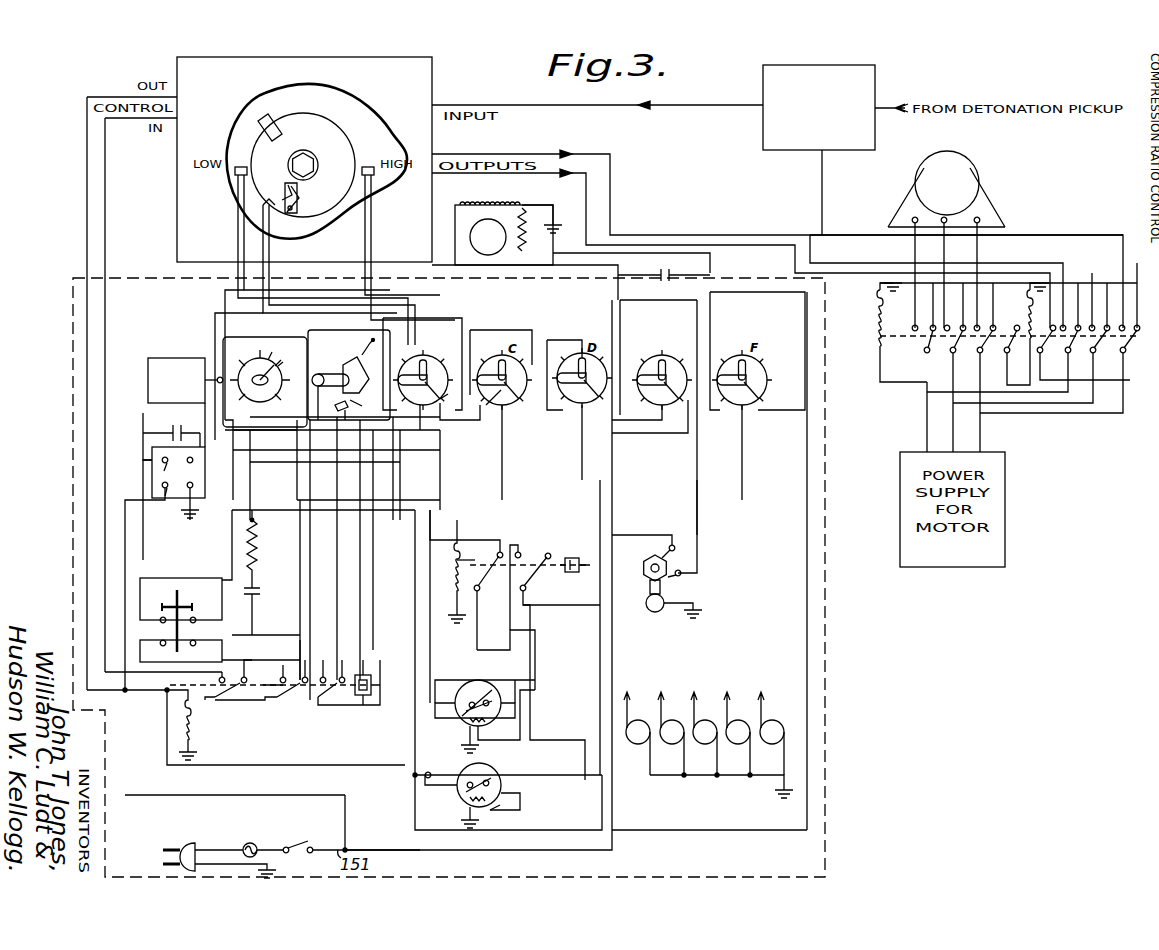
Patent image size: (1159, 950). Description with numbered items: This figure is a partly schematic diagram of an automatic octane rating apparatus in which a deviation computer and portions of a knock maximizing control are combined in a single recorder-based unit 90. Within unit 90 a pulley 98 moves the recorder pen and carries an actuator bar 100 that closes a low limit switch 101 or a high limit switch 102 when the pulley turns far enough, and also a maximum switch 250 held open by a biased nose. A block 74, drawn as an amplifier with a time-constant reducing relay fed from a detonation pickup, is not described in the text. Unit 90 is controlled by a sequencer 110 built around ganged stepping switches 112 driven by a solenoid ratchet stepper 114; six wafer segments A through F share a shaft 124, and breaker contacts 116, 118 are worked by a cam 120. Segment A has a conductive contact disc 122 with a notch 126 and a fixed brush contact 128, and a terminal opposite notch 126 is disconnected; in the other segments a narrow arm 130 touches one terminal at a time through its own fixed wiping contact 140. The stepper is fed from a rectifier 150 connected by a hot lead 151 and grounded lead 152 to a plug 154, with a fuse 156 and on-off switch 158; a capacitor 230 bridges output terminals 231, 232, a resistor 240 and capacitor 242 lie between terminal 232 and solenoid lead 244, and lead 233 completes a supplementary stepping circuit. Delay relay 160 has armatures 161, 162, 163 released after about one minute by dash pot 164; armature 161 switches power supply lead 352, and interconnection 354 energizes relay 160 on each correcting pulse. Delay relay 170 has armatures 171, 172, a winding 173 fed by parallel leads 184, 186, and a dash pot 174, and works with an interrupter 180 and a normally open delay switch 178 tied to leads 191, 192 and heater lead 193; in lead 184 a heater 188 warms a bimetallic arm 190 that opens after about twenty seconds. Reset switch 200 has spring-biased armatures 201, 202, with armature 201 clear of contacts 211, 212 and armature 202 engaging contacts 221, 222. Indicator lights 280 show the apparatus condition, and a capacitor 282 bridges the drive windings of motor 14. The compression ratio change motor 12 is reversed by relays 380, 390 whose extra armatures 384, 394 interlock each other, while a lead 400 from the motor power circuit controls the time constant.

The compression ratio change motor 12 is at (978, 178).
The motor 14 is at (490, 252).
The amplifier with time constant reducing relay 74 is at (876, 82).
The unit 90 is at (432, 80).
The pulley 98 is at (298, 118).
The actuator bar 100 is at (258, 124).
The low limit switch 101 is at (234, 198).
The high limit switch 102 is at (374, 190).
The sequencer 110 is at (73, 340).
The stepping switches 112 is at (227, 373).
The solenoid ratchet stepper 114 is at (148, 380).
The breaker contact 116 is at (329, 410).
The breaker contact 118 is at (367, 400).
The cam 120 is at (349, 375).
The contact disc 122 is at (272, 352).
The shaft 124 is at (320, 373).
The notch 126 is at (248, 360).
The wiper contact 128 is at (293, 366).
The arm 130 is at (432, 366).
The fixed wiping contact 140 is at (453, 399).
The rectifier 150 is at (159, 482).
The hot lead 151 is at (125, 528).
The grounded lead 152 is at (214, 512).
The plug 154 is at (193, 844).
The fuse 156 is at (252, 843).
The on-off switch 158 is at (306, 840).
The delay relay 160 is at (203, 708).
The switch armature 161 is at (242, 687).
The switch armature 162 is at (291, 692).
The switch armature 163 is at (330, 694).
The dash pot 164 is at (362, 673).
The delay relay 170 is at (474, 534).
The armature 171 is at (492, 588).
The armature 172 is at (537, 575).
The winding 173 is at (472, 558).
The dash pot 174 is at (572, 556).
The delay switch 178 is at (457, 683).
The interrupter 180 is at (681, 578).
The lead 184 is at (568, 772).
The lead 186 is at (592, 830).
The heater 188 is at (487, 810).
The switch arm 190 is at (498, 775).
The lead 191 is at (443, 648).
The lead 192 is at (483, 660).
The lead 193 is at (530, 694).
The reset switch 200 is at (177, 606).
The armature 201 is at (155, 598).
The armature 202 is at (195, 651).
The contact 211 is at (161, 623).
The contact 212 is at (197, 602).
The contact 221 is at (155, 651).
The contact 222 is at (194, 621).
The capacitor 230 is at (177, 426).
The DC output terminal 231 is at (145, 475).
The DC output terminal 232 is at (207, 439).
The lead 233 is at (306, 640).
The resistor 240 is at (258, 531).
The capacitor 242 is at (265, 609).
The solenoid lead 244 is at (209, 425).
The maximum switch 250 is at (297, 190).
The indicator lights 280 is at (789, 717).
The capacitor 282 is at (664, 275).
The power supply lead 352 is at (105, 148).
The interconnection 354 is at (97, 97).
The relay 380 is at (879, 386).
The armature 384 is at (1006, 367).
The relay 390 is at (1052, 300).
The armature 394 is at (1085, 359).
The lead 400 is at (838, 236).